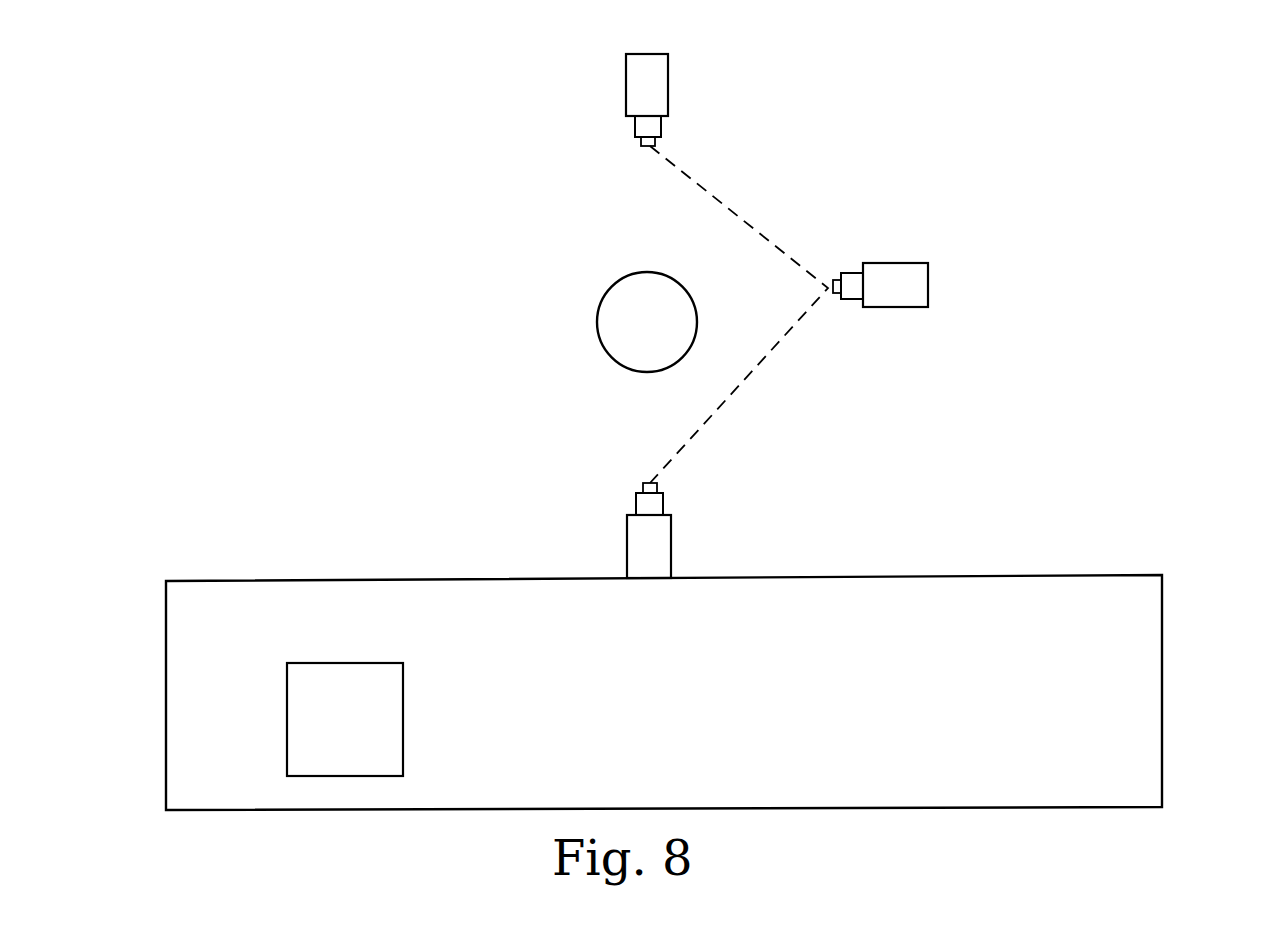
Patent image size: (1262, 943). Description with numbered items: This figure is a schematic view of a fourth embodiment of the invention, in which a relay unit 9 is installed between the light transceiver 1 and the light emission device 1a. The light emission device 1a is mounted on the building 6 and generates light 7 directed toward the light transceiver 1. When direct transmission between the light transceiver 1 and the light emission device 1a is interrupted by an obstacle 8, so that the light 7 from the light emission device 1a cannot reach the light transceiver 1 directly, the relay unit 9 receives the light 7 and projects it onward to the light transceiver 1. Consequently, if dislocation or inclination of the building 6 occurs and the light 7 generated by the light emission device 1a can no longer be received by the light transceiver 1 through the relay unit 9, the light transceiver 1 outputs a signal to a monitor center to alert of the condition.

The light transceiver 1 is at (655, 90).
The light emission device 1a is at (657, 550).
The building 6 is at (1139, 657).
The light 7 is at (750, 222).
The obstacle 8 is at (625, 337).
The relay unit 9 is at (907, 283).